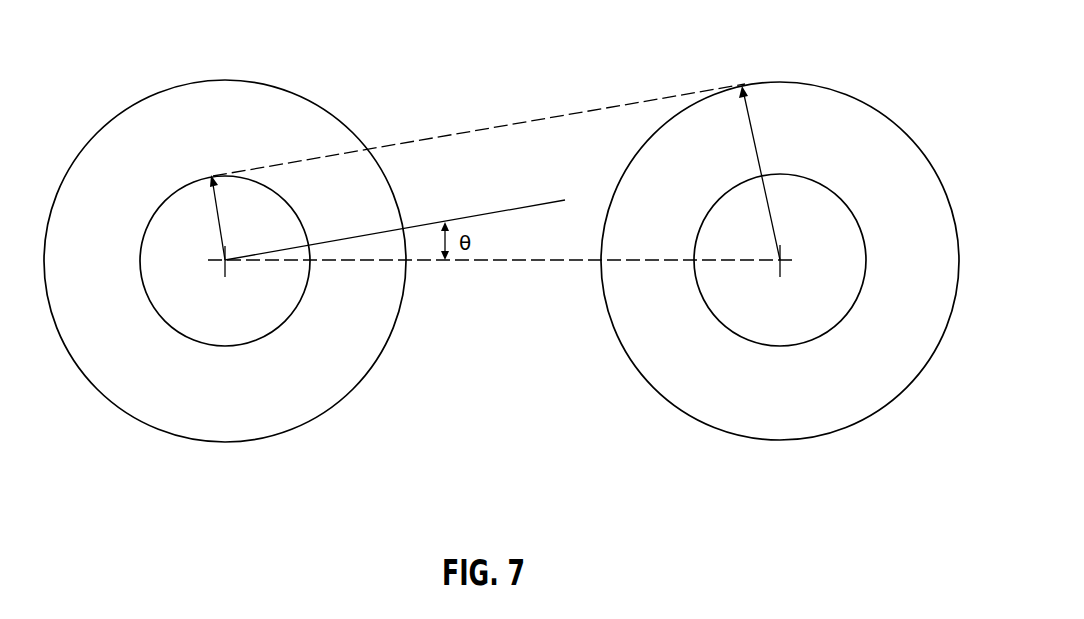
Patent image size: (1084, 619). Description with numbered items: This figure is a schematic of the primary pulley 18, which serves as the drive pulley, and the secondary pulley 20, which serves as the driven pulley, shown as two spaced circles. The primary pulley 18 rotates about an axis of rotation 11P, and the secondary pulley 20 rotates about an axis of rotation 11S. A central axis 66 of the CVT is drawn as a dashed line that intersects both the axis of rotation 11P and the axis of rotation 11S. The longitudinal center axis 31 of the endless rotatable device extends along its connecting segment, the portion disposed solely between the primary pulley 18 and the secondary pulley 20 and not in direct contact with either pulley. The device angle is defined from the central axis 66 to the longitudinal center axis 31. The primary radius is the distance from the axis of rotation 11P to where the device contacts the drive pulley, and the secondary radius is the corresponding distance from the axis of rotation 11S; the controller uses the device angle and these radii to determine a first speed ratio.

The primary pulley 18 is at (167, 89).
The secondary pulley 20 is at (872, 104).
The axis of rotation of the primary pulley 11P is at (223, 263).
The axis of rotation of the secondary pulley 11S is at (783, 263).
The longitudinal center axis 31 is at (537, 118).
The central axis 66 is at (508, 262).